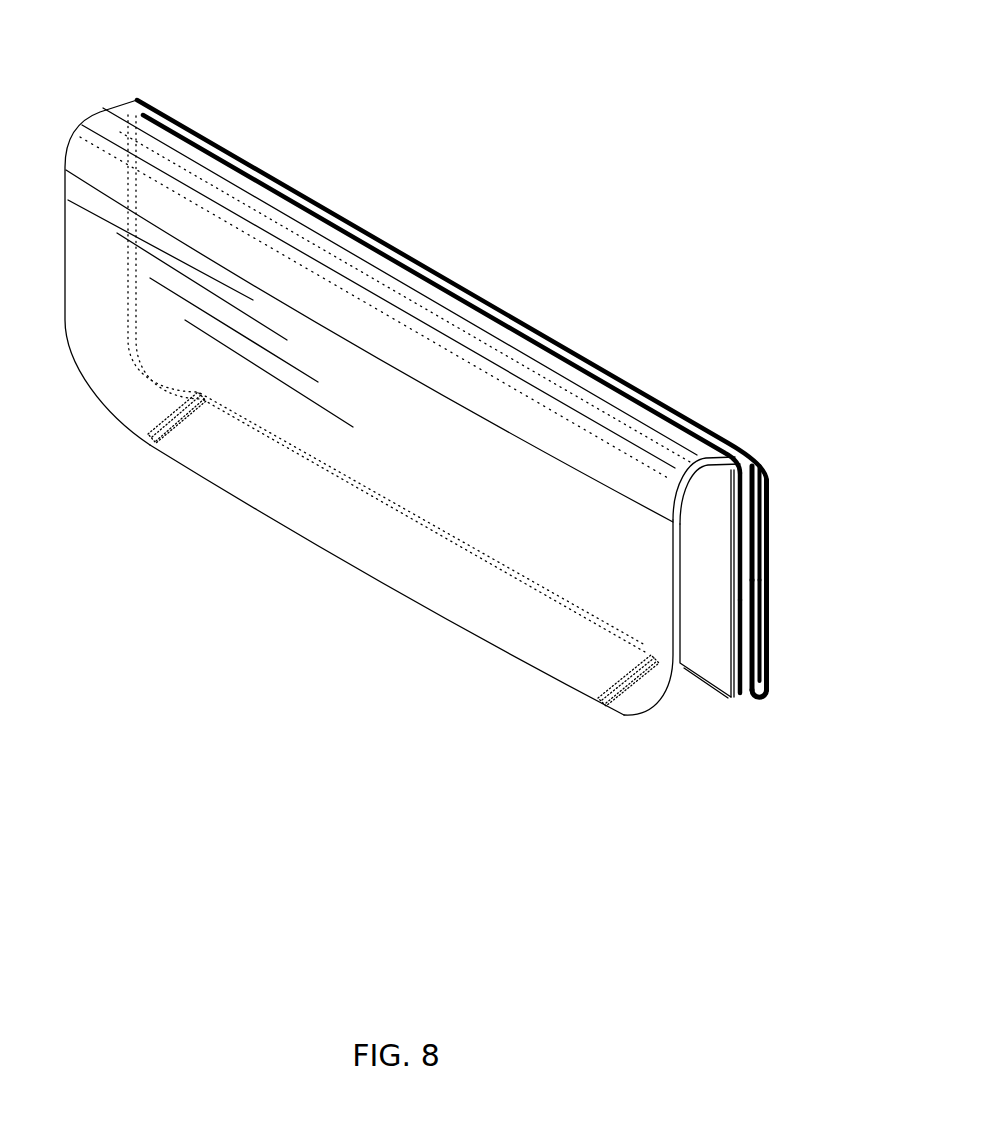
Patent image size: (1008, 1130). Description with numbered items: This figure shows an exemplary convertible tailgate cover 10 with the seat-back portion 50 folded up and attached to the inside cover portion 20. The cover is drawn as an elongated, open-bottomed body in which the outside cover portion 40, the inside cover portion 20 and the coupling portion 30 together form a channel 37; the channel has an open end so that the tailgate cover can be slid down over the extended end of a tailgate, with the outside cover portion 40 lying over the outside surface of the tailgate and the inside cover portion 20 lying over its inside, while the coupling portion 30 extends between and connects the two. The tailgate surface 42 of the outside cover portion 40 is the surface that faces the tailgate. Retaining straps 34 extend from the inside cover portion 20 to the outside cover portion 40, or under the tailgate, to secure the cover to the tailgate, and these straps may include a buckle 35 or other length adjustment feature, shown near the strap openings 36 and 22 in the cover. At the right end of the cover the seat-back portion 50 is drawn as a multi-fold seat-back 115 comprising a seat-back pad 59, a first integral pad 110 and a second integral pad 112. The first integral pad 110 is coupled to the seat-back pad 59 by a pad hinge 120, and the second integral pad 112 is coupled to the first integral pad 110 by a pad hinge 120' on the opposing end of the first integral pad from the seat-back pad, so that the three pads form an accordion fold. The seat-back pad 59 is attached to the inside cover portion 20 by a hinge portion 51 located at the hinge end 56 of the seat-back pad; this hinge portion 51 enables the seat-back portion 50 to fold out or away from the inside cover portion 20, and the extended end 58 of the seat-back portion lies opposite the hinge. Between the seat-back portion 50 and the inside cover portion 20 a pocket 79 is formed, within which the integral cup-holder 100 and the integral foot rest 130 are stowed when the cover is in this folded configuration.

The convertible tailgate cover 10 is at (352, 149).
The inside cover portion 20 is at (713, 672).
The side edge of housing 22 is at (702, 518).
The coupling portion 30 is at (588, 385).
The retaining strap 34 is at (167, 428).
The buckle 35 is at (642, 677).
The slot opening 36 is at (192, 417).
The channel 37 is at (705, 490).
The outside cover portion 40 is at (307, 488).
The tailgate surface 42 is at (330, 533).
The seat-back portion 50 is at (737, 460).
The hinge portion 51 is at (750, 690).
The hinge end of seat-back pad 56 is at (745, 693).
The extended end 58 is at (770, 462).
The seat-back pad 59 is at (742, 693).
The pocket 79 is at (380, 267).
The integral cup-holder 100 is at (137, 98).
The first integral pad 110 is at (757, 595).
The second integral pad 112 is at (753, 612).
The multi-fold seat-back 115 is at (770, 543).
The pad hinge 120 is at (775, 493).
The pad hinge 120' is at (805, 680).
The integral foot rest 130 is at (192, 157).